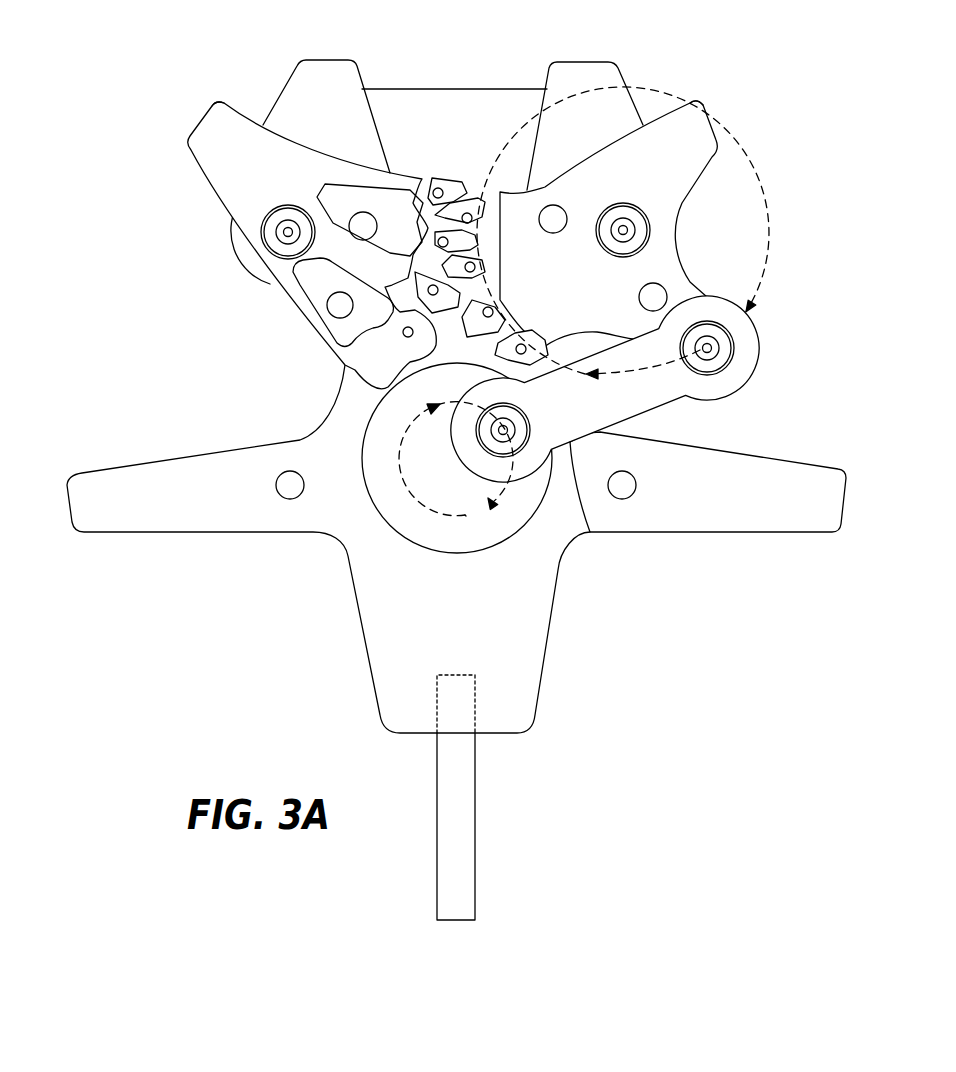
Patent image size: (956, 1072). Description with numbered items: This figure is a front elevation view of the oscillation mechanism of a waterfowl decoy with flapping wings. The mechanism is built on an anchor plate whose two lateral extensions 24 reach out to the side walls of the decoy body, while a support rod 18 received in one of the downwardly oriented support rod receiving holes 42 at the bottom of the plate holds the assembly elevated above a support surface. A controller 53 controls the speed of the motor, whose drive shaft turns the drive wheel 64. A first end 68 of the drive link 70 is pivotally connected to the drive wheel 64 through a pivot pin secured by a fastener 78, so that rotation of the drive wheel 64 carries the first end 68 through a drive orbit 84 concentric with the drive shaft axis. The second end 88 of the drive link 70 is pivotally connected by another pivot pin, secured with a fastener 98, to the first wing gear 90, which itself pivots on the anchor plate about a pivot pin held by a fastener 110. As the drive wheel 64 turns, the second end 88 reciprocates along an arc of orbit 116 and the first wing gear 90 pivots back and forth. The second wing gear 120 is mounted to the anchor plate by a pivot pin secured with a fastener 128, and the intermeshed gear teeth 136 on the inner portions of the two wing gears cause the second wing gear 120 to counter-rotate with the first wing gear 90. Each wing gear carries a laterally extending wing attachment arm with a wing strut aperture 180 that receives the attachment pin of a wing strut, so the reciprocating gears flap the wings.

The support rod 18 is at (476, 842).
The lateral extensions 24 is at (108, 534).
The support rod receiving holes 42 is at (473, 703).
The controller 53 is at (421, 88).
The drive wheel 64 is at (463, 553).
The first end of drive link 68 is at (491, 502).
The drive link 70 is at (597, 535).
The fastener 78 is at (495, 455).
The drive orbit 84 is at (465, 515).
The second end of drive link 88 is at (705, 400).
The first wing gear 90 is at (678, 275).
The fastener 98 is at (727, 372).
The fastener 110 is at (653, 232).
The arc of orbit 116 is at (767, 278).
The second wing gear 120 is at (213, 135).
The fastener 128 is at (263, 252).
The gear teeth 136 is at (437, 340).
The wing strut aperture 180 is at (243, 112).